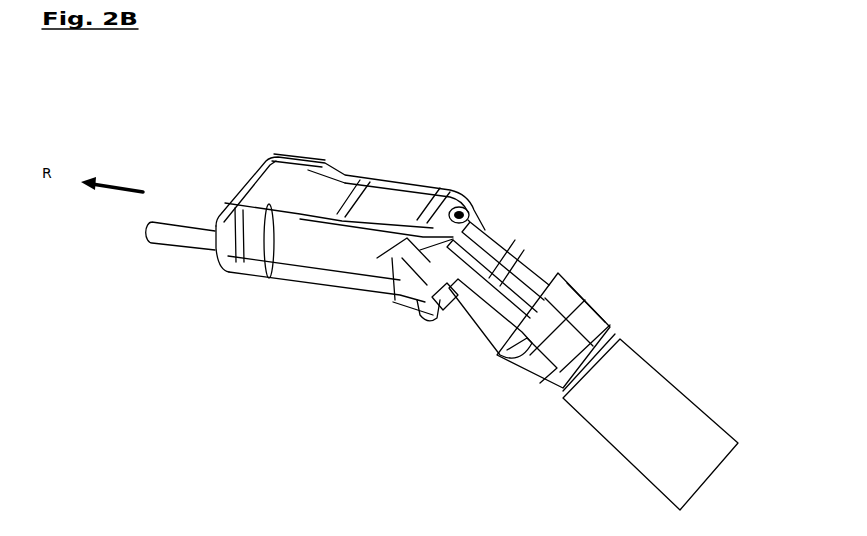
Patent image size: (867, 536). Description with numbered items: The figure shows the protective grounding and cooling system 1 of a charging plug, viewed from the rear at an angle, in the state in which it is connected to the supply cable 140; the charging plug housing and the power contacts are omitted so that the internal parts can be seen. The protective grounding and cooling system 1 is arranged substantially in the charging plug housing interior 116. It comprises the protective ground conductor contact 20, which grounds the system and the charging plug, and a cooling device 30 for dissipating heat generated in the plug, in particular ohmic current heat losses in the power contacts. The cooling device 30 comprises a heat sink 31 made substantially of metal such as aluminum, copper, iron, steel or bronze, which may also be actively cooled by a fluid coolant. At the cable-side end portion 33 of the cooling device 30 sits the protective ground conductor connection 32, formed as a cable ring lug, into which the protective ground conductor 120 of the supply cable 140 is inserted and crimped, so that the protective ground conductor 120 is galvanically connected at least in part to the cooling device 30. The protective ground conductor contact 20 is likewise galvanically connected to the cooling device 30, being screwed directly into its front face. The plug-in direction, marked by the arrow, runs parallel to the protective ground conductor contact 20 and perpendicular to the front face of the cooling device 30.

The protective grounding and cooling system 1 is at (350, 98).
The protective ground conductor contact 20 is at (170, 238).
The cooling device 30 is at (288, 272).
The heat sink 31 is at (352, 252).
The protective ground conductor connection 32 is at (475, 230).
The cable-side end portion 33 is at (441, 275).
The charging plug housing interior 116 is at (381, 173).
The protective ground conductor 120 is at (523, 270).
The supply cable 140 is at (635, 403).